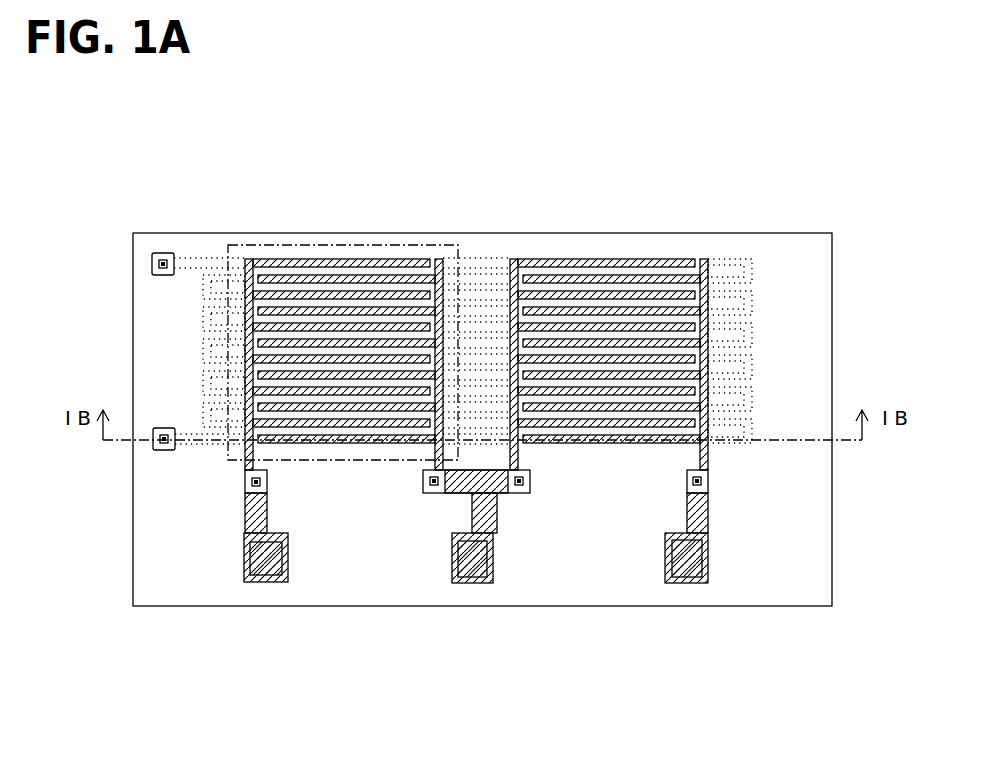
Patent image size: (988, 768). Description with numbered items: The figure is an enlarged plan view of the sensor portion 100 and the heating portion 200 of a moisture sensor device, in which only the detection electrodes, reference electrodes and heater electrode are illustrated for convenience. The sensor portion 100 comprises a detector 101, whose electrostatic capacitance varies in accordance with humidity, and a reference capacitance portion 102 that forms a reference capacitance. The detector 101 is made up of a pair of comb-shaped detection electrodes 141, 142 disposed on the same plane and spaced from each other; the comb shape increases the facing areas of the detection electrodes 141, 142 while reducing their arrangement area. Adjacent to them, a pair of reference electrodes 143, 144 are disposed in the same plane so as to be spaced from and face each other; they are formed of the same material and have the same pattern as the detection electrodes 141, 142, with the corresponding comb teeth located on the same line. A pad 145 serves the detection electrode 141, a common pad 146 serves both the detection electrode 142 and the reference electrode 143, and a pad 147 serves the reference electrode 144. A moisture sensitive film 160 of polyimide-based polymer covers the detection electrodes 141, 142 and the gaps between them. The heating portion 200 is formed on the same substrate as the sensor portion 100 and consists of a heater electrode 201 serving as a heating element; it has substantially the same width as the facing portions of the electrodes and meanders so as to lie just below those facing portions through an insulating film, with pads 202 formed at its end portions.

The sensor portion 100 is at (813, 221).
The detector 101 is at (356, 408).
The reference capacitance portion 102 is at (609, 411).
The detection electrode 141 is at (290, 258).
The detection electrode 142 is at (357, 448).
The reference electrode 143 is at (560, 258).
The reference electrode 144 is at (594, 448).
The pad 145 is at (258, 583).
The common pad 146 is at (475, 584).
The pad 147 is at (690, 584).
The moisture sensitive film 160 is at (350, 243).
The heating portion 200 is at (409, 343).
The heater electrode 201 is at (203, 348).
The pads 202 is at (152, 262).